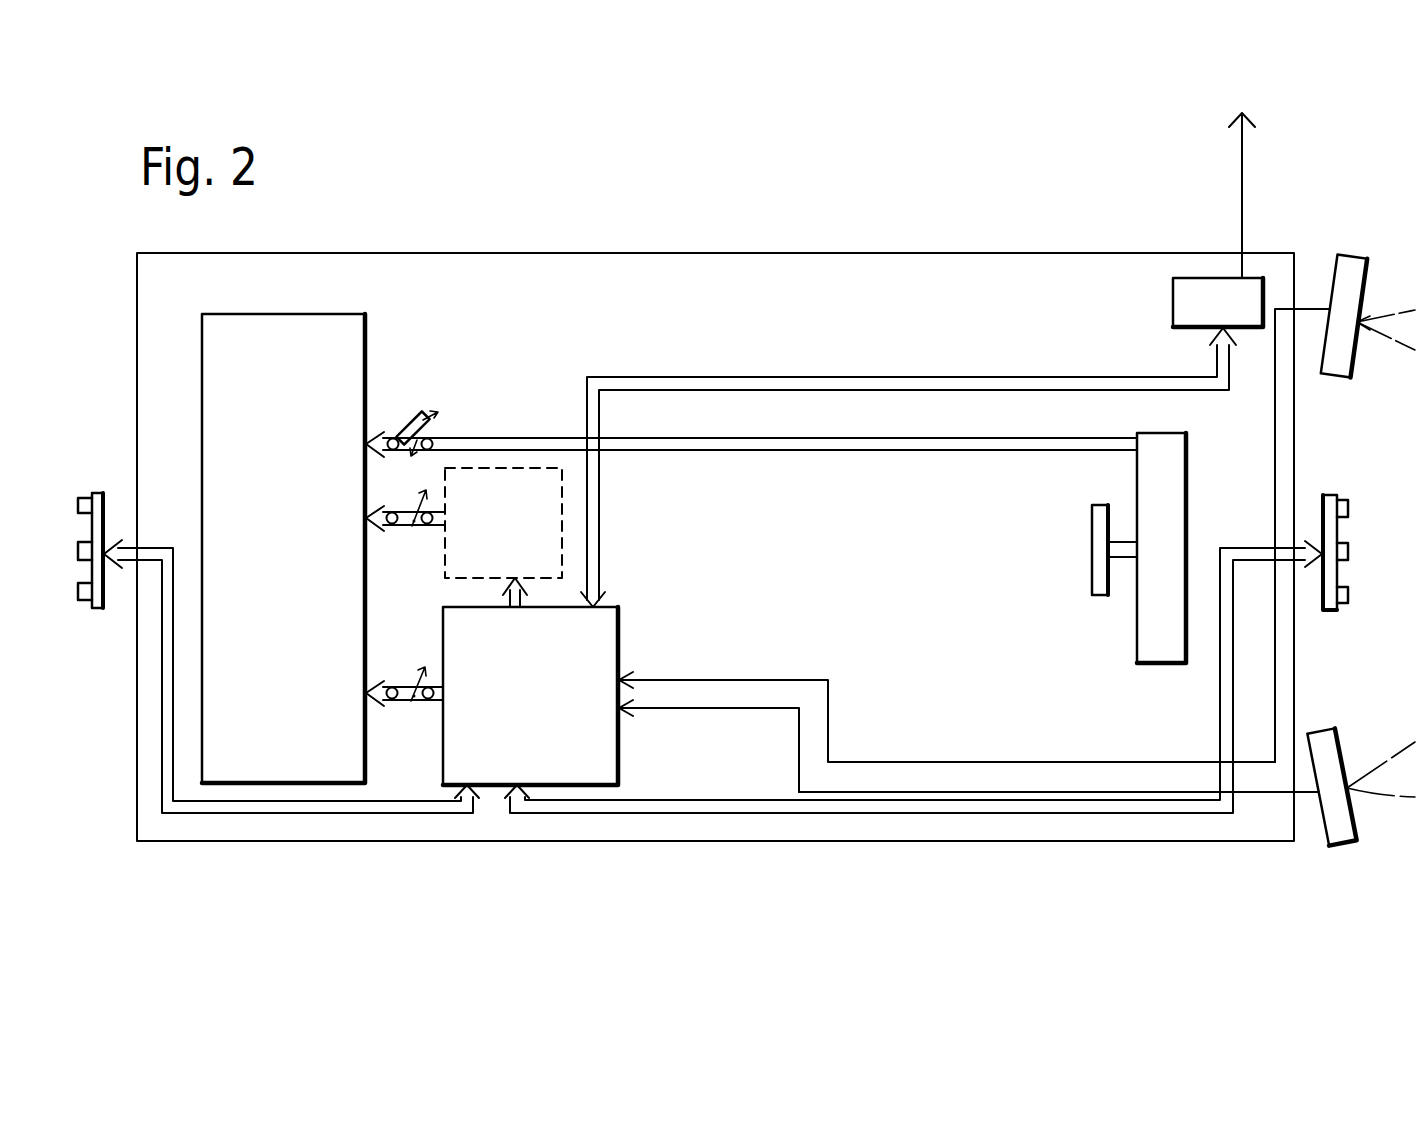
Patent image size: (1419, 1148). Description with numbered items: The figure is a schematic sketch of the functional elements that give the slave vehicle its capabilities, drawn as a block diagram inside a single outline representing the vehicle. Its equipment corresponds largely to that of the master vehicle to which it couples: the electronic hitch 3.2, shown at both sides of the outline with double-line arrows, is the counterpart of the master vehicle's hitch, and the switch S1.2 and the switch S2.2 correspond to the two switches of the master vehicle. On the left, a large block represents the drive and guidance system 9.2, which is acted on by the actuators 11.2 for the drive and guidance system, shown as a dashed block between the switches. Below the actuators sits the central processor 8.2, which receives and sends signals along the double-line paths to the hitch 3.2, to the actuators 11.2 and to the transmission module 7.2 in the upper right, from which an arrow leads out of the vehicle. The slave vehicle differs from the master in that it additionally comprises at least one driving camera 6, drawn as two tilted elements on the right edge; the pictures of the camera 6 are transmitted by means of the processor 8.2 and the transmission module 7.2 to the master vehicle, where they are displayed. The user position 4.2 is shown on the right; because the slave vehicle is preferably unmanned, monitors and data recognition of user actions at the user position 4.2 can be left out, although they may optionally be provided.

The electronic hitch 3.2 is at (97, 493).
The user position 4.2 is at (1147, 650).
The driving camera 6 is at (1360, 280).
The transmission module 7.2 is at (1203, 295).
The central processor 8.2 is at (500, 728).
The drive and guidance system 9.2 is at (268, 738).
The actuators for the drive and guidance system 11.2 is at (505, 488).
The switch S1.2 is at (410, 415).
The switch S2.2 is at (415, 525).